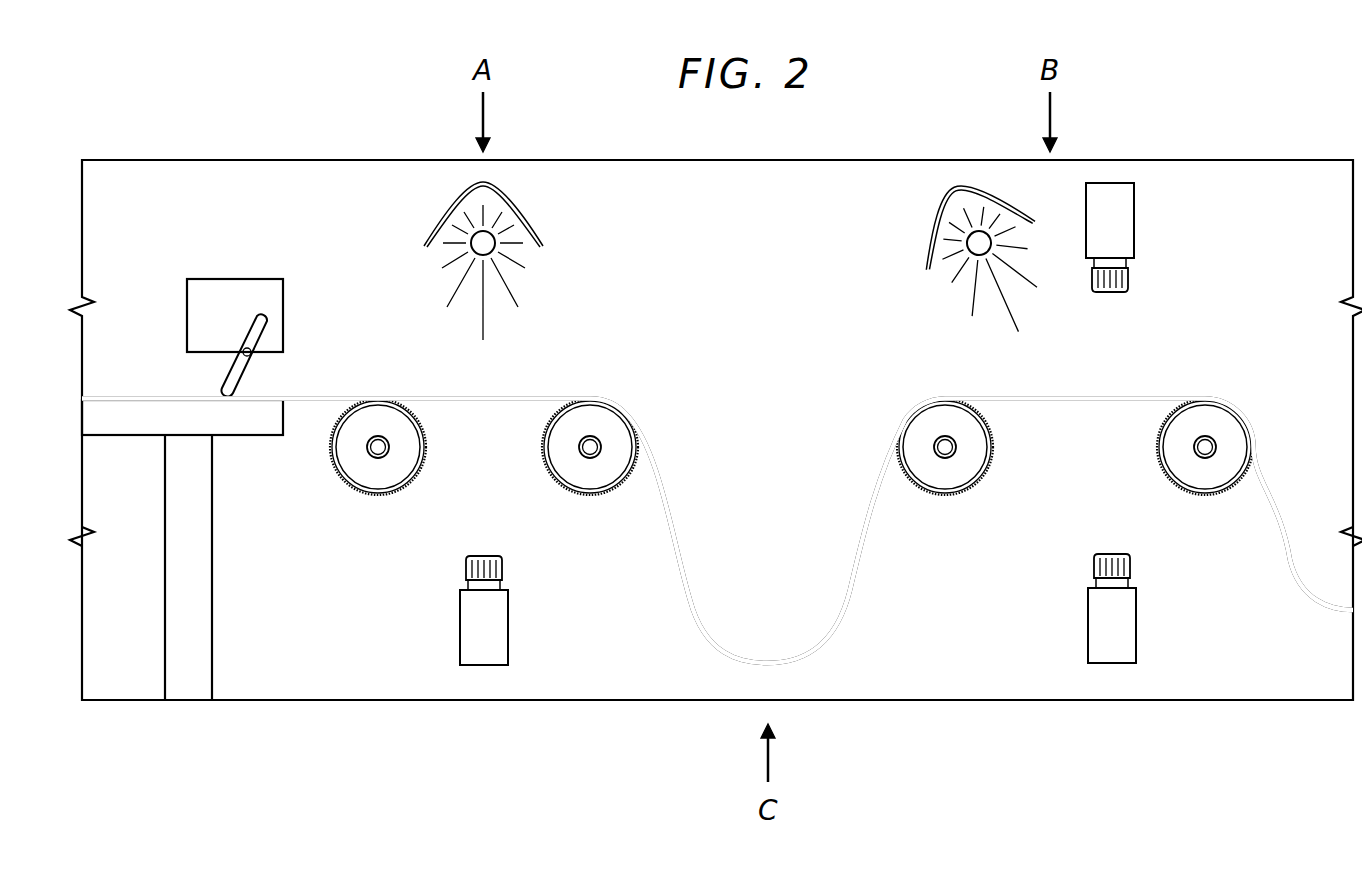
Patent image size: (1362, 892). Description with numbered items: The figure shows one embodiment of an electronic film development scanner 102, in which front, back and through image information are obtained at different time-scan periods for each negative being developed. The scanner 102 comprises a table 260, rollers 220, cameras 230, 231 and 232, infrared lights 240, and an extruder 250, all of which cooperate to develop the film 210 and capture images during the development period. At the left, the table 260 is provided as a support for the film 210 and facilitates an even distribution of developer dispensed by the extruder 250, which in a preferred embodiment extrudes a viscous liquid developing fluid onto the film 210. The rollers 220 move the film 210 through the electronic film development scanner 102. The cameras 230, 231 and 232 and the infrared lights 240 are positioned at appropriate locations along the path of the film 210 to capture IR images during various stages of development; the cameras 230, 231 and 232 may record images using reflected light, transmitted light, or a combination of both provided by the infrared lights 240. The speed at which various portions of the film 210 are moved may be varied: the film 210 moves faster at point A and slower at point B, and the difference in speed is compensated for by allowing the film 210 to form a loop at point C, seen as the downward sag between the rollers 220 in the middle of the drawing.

The electronic film development scanner 102 is at (246, 771).
The film 210 is at (842, 658).
The rollers 220 is at (371, 510).
The camera 230 is at (450, 634).
The camera 231 is at (1146, 226).
The camera 232 is at (1147, 633).
The infrared (IR) lights 240 is at (541, 218).
The extruder 250 is at (274, 383).
The table 260 is at (150, 458).